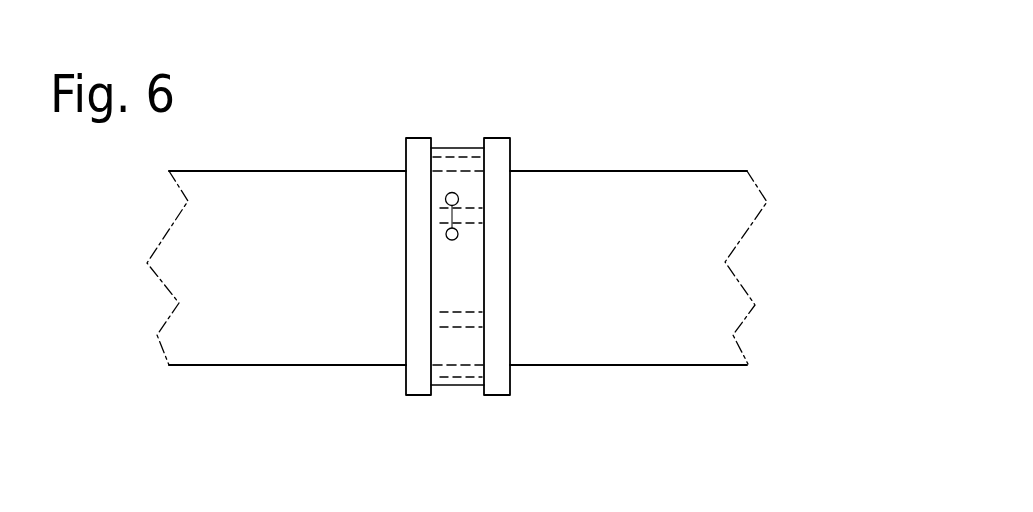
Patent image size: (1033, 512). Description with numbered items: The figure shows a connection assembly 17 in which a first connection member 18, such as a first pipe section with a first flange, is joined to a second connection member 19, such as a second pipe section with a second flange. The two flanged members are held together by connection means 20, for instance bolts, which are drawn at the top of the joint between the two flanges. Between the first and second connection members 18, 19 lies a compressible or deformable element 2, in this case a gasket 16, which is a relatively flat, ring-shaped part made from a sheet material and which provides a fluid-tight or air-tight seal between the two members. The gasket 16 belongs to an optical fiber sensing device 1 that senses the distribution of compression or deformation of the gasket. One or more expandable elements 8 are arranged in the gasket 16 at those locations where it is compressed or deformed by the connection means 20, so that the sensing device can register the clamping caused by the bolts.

The optical fiber sensing device 1 is at (461, 196).
The compressible or deformable element 2 is at (457, 303).
The gasket 16 is at (440, 380).
The expandable element 8 is at (452, 241).
The connection assembly 17 is at (468, 219).
The first connection member 18 is at (420, 230).
The second connection member 19 is at (495, 235).
The connection means 20 is at (442, 167).